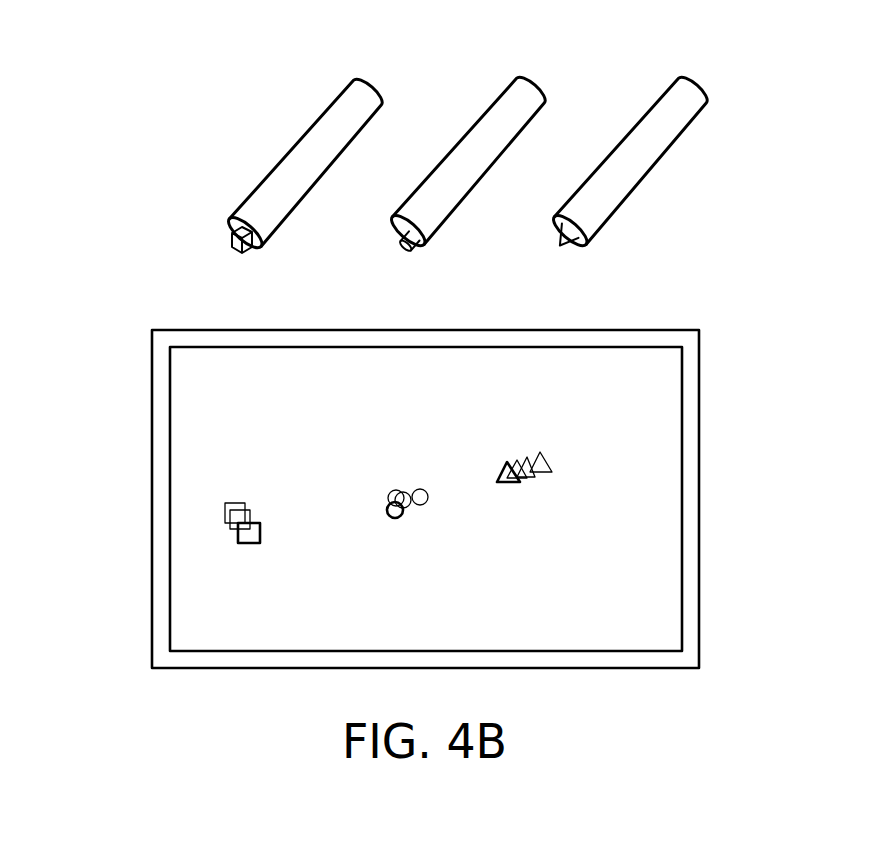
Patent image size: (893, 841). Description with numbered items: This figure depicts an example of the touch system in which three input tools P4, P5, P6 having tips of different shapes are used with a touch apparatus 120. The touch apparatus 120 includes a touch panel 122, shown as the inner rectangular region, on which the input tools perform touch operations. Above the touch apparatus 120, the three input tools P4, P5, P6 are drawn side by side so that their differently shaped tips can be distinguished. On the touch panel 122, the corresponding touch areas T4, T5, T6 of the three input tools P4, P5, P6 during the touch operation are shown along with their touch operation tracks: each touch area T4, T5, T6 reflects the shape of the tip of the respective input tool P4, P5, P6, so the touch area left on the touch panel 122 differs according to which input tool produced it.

The input tool P4 is at (327, 127).
The input tool P5 is at (498, 127).
The input tool P6 is at (660, 127).
The touch apparatus 120 is at (152, 405).
The touch panel 122 is at (170, 473).
The touch area T4 is at (242, 549).
The touch area T5 is at (407, 525).
The touch area T6 is at (524, 489).